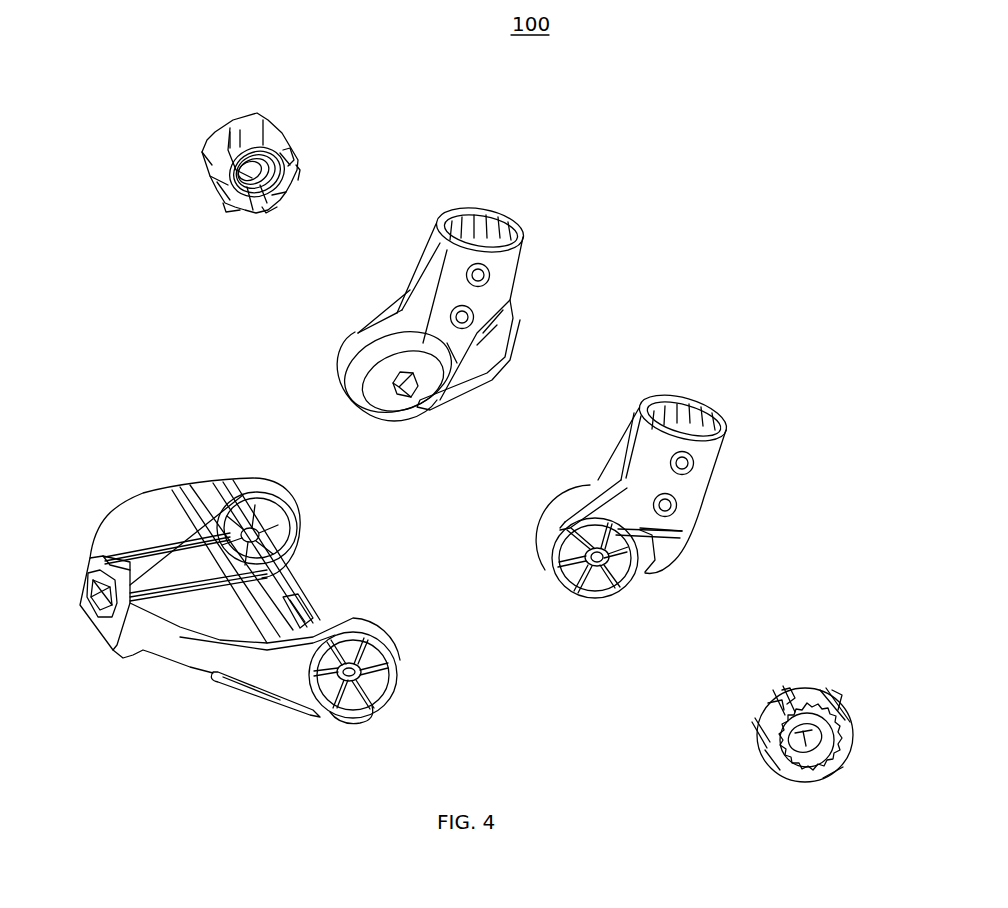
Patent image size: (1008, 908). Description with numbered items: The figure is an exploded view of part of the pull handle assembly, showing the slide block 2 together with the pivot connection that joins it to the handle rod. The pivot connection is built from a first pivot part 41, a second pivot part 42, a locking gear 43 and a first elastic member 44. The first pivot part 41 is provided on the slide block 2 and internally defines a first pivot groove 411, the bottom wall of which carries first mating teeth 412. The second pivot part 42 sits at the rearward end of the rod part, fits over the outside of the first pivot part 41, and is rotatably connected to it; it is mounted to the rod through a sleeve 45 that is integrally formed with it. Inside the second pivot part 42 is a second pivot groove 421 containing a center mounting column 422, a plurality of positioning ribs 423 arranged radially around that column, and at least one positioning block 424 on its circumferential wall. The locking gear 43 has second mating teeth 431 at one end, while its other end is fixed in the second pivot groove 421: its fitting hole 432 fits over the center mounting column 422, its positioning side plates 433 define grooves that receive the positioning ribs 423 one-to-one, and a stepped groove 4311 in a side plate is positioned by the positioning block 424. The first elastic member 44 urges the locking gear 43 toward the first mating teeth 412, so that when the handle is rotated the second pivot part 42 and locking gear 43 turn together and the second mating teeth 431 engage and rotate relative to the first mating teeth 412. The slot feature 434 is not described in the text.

The slide block 2 is at (123, 525).
The first pivot part 41 is at (240, 513).
The first pivot groove 411 is at (82, 603).
The first mating teeth 412 is at (268, 580).
The second pivot part 42 is at (360, 347).
The second pivot groove 421 is at (613, 575).
The center mounting column 422 is at (562, 586).
The positioning ribs 423 is at (635, 572).
The positioning block 424 is at (682, 531).
The locking gear 43 is at (212, 130).
The second mating teeth 431 is at (235, 118).
The stepped groove 4311 is at (300, 176).
The fitting hole 432 is at (290, 150).
The positioning side plates 433 is at (233, 205).
The slot 434 is at (275, 200).
The first elastic member 44 is at (225, 184).
The sleeve 45 is at (462, 325).